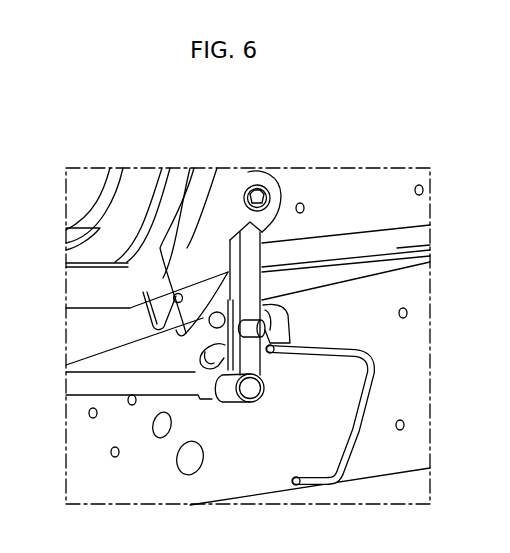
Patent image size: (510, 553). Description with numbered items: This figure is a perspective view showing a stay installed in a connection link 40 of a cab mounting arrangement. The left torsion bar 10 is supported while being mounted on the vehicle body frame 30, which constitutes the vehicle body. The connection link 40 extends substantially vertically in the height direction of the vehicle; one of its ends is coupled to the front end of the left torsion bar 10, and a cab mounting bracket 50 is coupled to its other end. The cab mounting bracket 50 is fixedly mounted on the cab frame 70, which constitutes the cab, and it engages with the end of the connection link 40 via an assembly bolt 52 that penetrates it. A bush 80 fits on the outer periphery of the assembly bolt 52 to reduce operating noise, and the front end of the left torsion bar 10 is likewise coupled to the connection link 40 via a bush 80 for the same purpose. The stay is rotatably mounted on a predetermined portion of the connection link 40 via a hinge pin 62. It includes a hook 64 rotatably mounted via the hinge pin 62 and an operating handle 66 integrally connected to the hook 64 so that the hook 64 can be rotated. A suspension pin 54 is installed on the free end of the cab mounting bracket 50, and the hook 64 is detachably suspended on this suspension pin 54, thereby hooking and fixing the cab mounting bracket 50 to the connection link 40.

The left torsion bar 10 is at (100, 393).
The vehicle body frame 30 is at (386, 383).
The connection link 40 is at (264, 238).
The cab mounting bracket 50 is at (227, 176).
The assembly bolt 52 is at (264, 232).
The suspension pin 54 is at (140, 297).
The hinge pin 62 is at (300, 326).
The hook 64 is at (200, 360).
The operating handle 66 is at (365, 430).
The cab frame 70 is at (140, 176).
The bush 80 is at (255, 183).